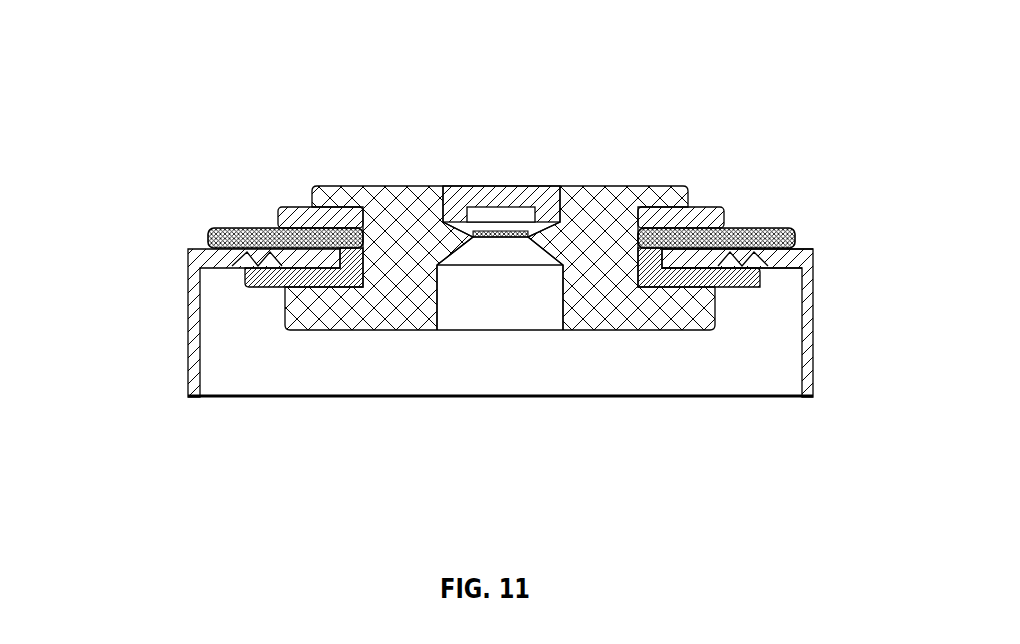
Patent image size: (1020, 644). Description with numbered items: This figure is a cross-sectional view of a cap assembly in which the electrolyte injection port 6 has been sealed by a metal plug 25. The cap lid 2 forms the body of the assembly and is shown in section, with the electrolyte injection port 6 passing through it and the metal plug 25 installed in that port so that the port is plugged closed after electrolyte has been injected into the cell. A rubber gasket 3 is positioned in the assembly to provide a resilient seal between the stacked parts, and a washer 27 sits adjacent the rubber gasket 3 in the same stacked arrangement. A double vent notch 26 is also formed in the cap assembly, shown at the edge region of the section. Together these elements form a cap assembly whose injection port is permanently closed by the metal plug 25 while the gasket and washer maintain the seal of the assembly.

The cap lid 2 is at (187, 250).
The rubber gasket 3 is at (718, 212).
The electrolyte injection port 6 is at (497, 297).
The metal plug 25 is at (538, 186).
The double vent notch 26 is at (813, 250).
The washer 27 is at (293, 206).